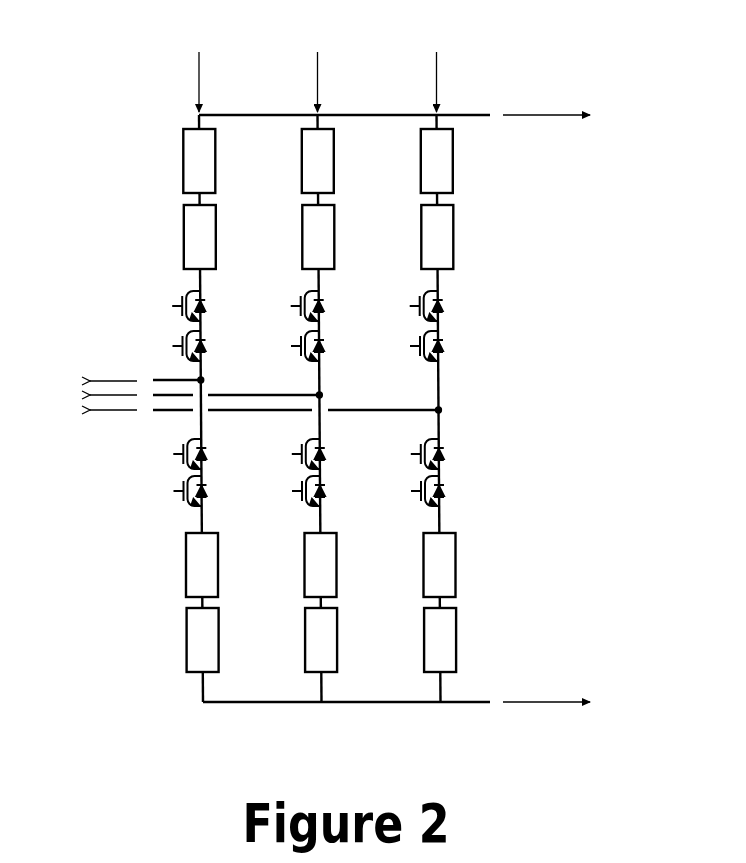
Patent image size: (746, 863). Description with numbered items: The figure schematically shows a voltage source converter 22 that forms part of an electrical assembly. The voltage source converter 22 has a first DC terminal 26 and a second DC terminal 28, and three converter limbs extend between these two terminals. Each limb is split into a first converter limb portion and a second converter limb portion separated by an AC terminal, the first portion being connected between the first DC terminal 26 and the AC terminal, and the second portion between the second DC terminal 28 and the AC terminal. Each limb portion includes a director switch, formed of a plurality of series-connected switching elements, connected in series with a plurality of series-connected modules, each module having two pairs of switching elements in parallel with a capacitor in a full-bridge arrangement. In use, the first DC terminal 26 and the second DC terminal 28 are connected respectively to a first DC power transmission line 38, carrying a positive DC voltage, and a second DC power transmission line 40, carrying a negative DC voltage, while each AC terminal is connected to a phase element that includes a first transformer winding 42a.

The voltage source converter 22 is at (148, 268).
The first DC terminal 26 is at (444, 119).
The second DC terminal 28 is at (442, 700).
The first DC power transmission line 38 is at (566, 116).
The second DC power transmission line 40 is at (570, 705).
The first transformer winding 42a is at (82, 395).